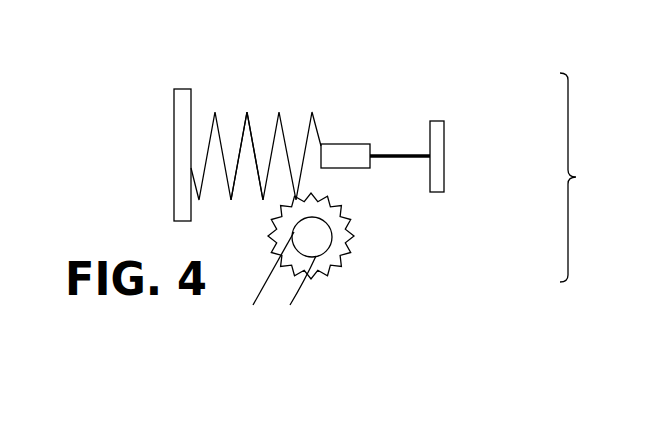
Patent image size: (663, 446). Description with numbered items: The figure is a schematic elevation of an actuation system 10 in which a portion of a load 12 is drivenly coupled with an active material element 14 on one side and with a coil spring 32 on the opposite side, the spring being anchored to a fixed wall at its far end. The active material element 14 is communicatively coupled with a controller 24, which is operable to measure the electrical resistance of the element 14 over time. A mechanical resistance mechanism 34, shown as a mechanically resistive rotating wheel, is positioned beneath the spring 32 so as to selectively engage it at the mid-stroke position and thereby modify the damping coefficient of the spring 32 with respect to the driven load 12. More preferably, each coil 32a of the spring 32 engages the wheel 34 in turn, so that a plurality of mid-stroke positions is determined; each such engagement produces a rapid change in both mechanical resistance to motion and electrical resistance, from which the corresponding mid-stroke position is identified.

The system 10 is at (132, 66).
The load 12 is at (345, 144).
The active material element 14 is at (398, 155).
The controller 24 is at (446, 152).
The spring 32 is at (294, 96).
The coil 32a is at (247, 110).
The mechanical resistance mechanism 34 is at (353, 223).